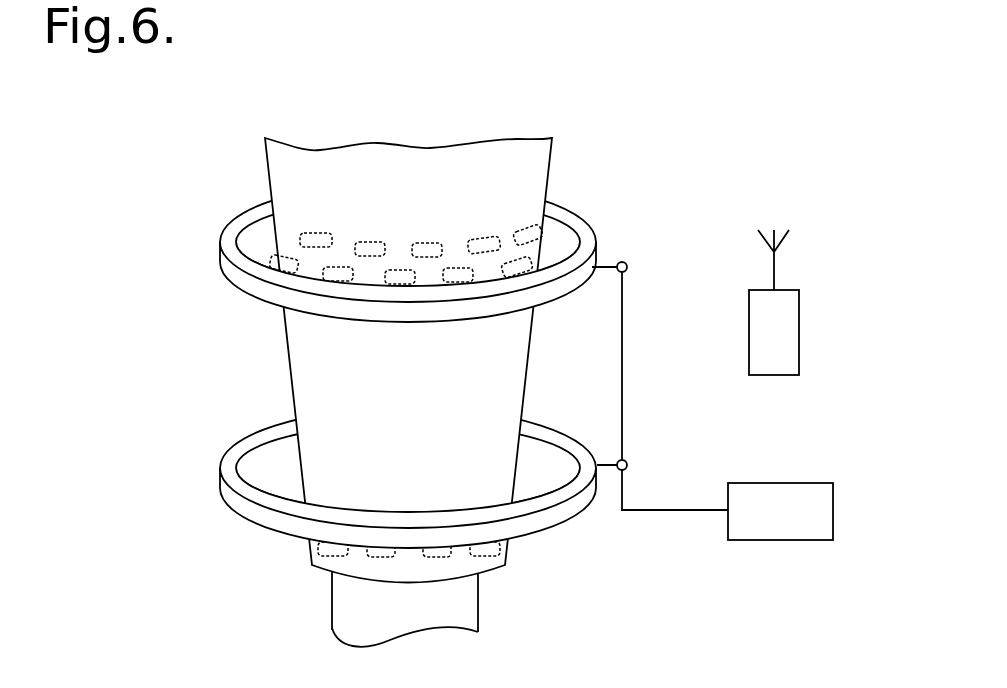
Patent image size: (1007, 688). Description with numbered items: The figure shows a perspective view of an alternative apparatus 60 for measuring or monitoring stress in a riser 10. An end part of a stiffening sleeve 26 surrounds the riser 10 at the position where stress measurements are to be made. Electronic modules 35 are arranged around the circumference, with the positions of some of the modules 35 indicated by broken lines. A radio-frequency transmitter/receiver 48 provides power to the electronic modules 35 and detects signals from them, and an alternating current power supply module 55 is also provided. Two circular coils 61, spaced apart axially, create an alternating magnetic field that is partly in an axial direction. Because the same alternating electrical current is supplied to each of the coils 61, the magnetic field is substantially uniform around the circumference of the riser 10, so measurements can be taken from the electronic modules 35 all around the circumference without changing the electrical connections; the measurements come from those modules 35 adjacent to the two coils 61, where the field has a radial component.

The riser 10 is at (450, 605).
The stiffening sleeve 26 is at (525, 183).
The electronic modules 35 is at (336, 272).
The radio-frequency transmitter/receiver 48 is at (777, 345).
The alternating current power supply module 55 is at (807, 502).
The alternative apparatus 60 is at (670, 133).
The circular coils 61 is at (228, 235).